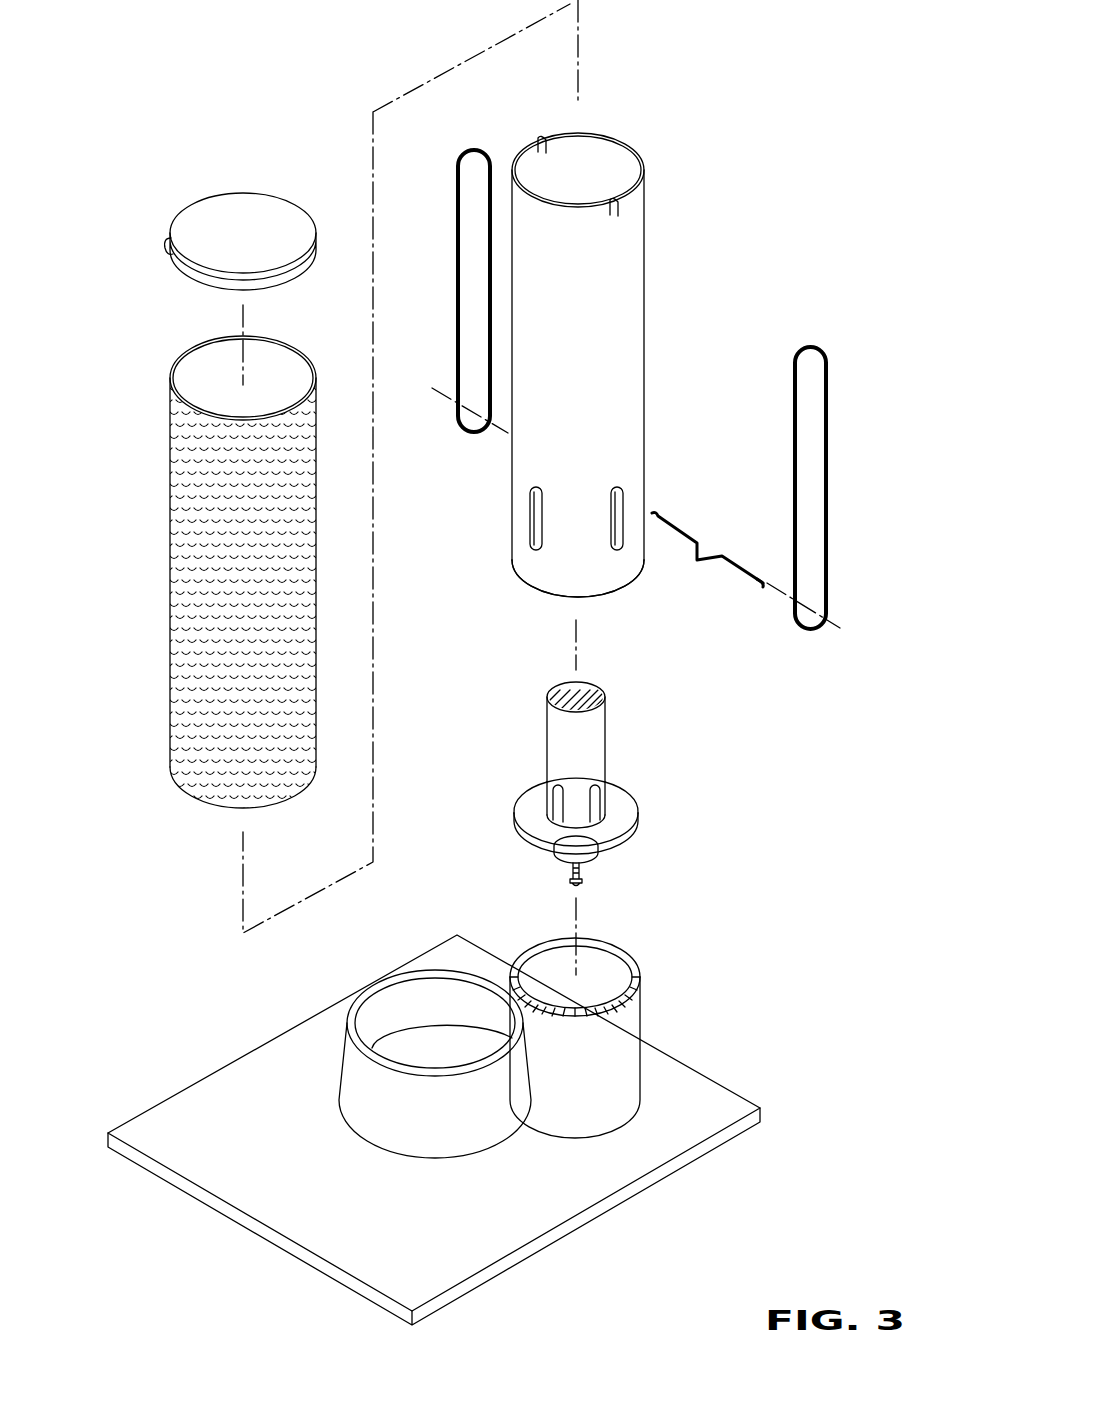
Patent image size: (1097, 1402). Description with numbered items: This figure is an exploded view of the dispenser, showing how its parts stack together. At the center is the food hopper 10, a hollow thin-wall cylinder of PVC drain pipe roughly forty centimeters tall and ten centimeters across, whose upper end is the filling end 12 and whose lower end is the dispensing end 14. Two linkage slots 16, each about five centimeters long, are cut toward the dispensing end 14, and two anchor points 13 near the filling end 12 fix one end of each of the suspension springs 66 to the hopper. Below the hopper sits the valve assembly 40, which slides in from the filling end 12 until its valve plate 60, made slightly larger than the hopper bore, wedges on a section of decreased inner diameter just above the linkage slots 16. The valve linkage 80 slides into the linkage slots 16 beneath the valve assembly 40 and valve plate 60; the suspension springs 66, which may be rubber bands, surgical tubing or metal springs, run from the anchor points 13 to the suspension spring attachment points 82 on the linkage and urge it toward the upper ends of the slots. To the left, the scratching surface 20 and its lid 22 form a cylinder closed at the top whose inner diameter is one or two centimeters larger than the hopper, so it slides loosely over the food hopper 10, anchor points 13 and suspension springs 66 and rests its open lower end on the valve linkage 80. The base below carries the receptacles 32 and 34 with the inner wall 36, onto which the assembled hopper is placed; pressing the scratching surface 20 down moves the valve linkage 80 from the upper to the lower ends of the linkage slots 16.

The food hopper 10 is at (644, 240).
The filling end 12 is at (607, 163).
The anchor points 13 is at (540, 140).
The dispensing end 14 is at (625, 587).
The linkage slots 16 is at (617, 492).
The scratching surface 20 is at (170, 510).
The lid 22 is at (183, 223).
The bowl receptacle 32 is at (463, 1113).
The cup receptacle 34 is at (610, 957).
The inner wall of bowl 36 is at (512, 1030).
The valve assembly 40 is at (638, 757).
The valve plate 60 is at (638, 820).
The suspension springs 66 is at (457, 270).
The valve linkage 80 is at (667, 528).
The suspension spring attachment points 82 is at (762, 585).